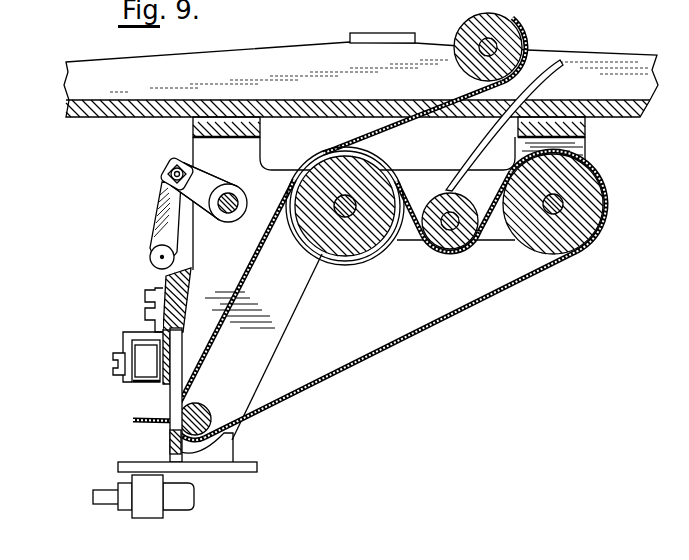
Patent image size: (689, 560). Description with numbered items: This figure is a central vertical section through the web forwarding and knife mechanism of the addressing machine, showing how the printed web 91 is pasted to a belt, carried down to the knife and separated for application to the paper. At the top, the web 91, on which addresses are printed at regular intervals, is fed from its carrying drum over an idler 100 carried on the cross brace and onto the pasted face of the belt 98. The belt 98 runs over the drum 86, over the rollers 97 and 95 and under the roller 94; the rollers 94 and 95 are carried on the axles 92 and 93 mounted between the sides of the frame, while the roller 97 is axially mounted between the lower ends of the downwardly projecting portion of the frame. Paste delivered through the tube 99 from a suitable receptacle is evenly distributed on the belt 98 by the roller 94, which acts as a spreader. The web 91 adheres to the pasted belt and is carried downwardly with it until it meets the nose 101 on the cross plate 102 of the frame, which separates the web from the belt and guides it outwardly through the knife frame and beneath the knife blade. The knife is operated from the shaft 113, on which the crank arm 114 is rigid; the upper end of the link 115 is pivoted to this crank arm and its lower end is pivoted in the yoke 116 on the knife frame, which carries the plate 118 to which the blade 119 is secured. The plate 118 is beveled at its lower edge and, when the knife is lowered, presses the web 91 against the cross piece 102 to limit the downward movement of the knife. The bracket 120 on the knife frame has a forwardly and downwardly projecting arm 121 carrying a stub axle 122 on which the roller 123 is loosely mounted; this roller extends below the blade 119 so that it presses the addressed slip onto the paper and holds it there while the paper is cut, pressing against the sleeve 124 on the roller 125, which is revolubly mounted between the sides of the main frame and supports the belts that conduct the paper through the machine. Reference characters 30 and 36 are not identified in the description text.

The table 30 is at (289, 54).
The guide block 36 is at (388, 33).
The idler 100 is at (470, 62).
The tube 99 is at (540, 72).
The web 91 is at (390, 123).
The crank arm 114 is at (200, 180).
The link 115 is at (157, 213).
The shaft 113 is at (229, 213).
The yoke 116 is at (149, 256).
The bracket 120 is at (152, 290).
The plate 118 is at (188, 293).
The arm 121 is at (125, 340).
The blade 119 is at (178, 341).
The stub axle 122 is at (113, 365).
The roller 123 is at (132, 385).
The nose 101 is at (170, 423).
The cross plate 102 is at (172, 446).
The roller 97 is at (205, 408).
The belt 98 is at (385, 346).
The drum 86 is at (357, 255).
The roller 94 is at (453, 251).
The roller 95 is at (530, 242).
The axle 92 is at (485, 197).
The axle 93 is at (562, 206).
The sleeve 124 is at (150, 510).
The roller 125 is at (182, 512).